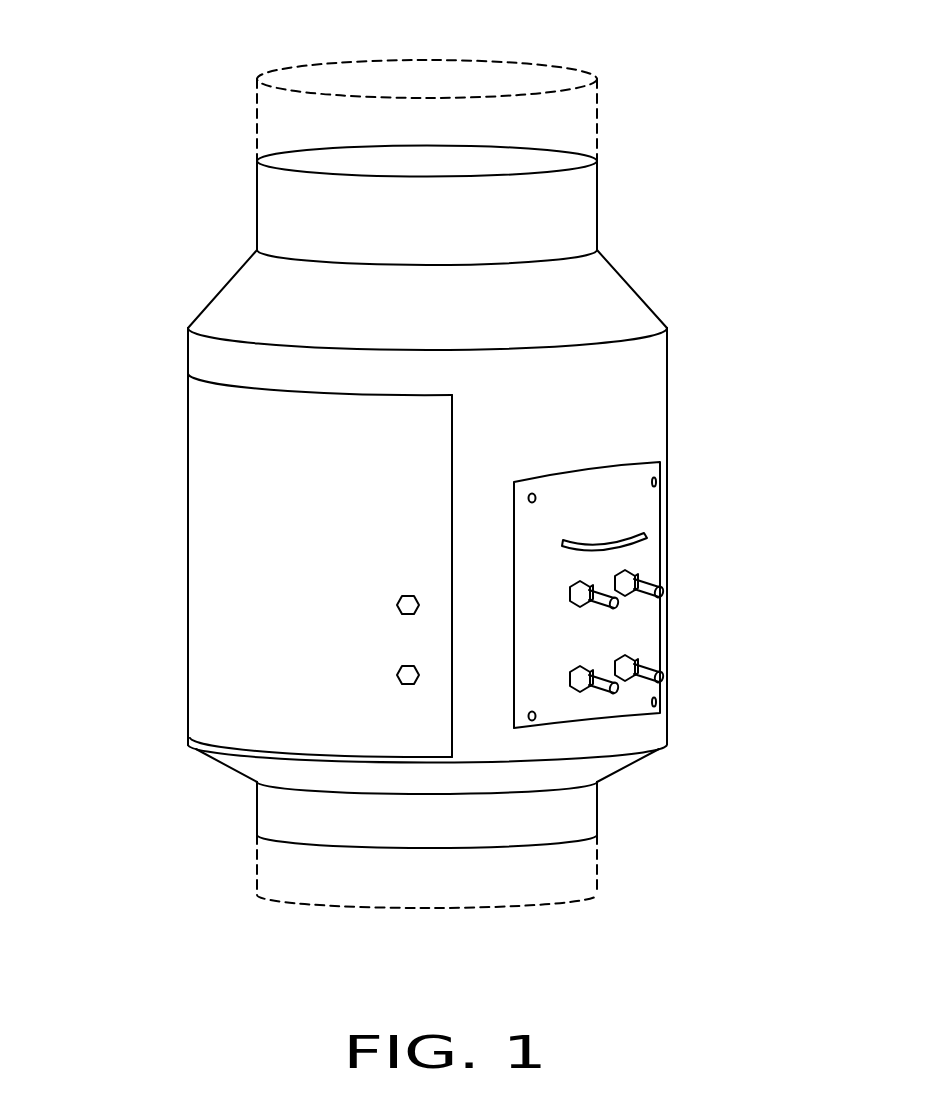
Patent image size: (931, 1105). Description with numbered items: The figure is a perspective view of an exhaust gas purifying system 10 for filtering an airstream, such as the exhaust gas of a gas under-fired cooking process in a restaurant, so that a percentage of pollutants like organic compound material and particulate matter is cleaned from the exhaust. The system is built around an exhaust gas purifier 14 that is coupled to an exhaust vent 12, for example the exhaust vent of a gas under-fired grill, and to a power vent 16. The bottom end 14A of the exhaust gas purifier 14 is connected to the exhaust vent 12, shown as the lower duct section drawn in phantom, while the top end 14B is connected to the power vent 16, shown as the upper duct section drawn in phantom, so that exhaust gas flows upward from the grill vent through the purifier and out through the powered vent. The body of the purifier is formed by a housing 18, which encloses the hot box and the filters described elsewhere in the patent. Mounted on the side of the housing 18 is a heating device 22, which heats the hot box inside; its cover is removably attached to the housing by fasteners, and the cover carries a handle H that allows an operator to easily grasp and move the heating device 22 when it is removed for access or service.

The exhaust gas purifying system 10 is at (143, 127).
The exhaust vent 12 is at (295, 903).
The exhaust gas purifier 14 is at (182, 432).
The bottom end 14A is at (257, 810).
The top end 14B is at (257, 213).
The power vent 16 is at (556, 66).
The housing 18 is at (188, 590).
The heating device 22 is at (648, 504).
The handle H is at (648, 543).